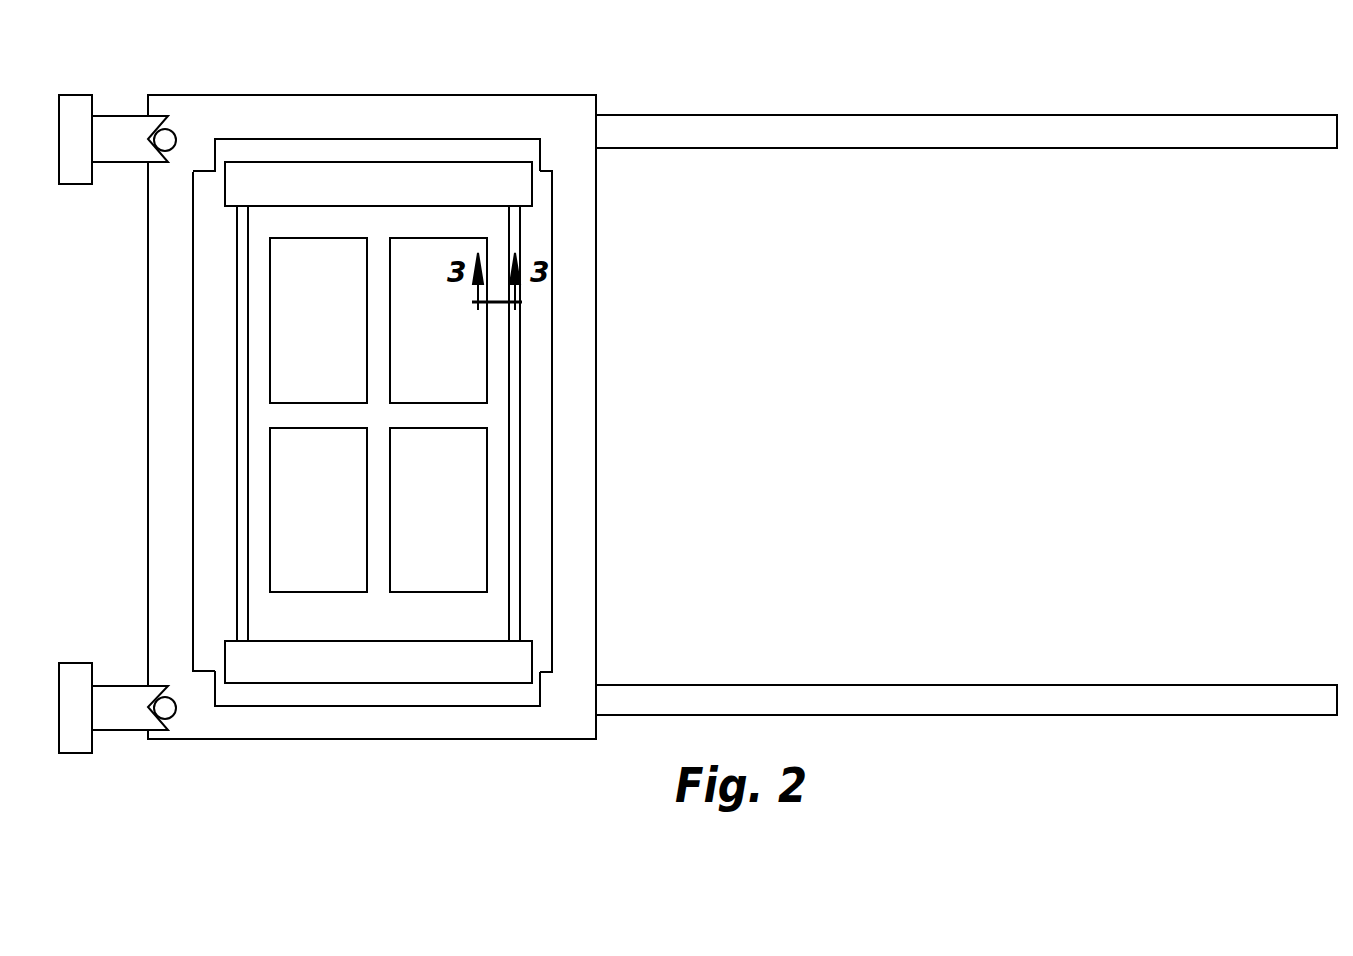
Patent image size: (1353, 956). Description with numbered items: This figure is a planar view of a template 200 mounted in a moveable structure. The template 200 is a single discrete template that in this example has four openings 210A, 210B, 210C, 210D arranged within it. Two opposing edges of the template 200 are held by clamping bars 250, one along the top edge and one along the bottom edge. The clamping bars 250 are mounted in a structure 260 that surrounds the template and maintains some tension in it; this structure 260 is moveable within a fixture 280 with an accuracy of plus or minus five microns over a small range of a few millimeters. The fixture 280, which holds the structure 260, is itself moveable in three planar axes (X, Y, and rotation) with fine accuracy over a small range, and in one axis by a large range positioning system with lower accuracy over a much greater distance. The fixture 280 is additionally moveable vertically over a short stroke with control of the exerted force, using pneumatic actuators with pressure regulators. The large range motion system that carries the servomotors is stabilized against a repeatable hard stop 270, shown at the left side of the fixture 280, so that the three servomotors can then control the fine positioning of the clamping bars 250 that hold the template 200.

The template 200 is at (362, 631).
The opening 210A is at (352, 329).
The opening 210B is at (472, 356).
The opening 210C is at (352, 514).
The opening 210D is at (472, 514).
The clamping bars 250 is at (398, 197).
The structure 260 is at (305, 150).
The repeatable hard stop 270 is at (125, 713).
The fixture 280 is at (578, 443).